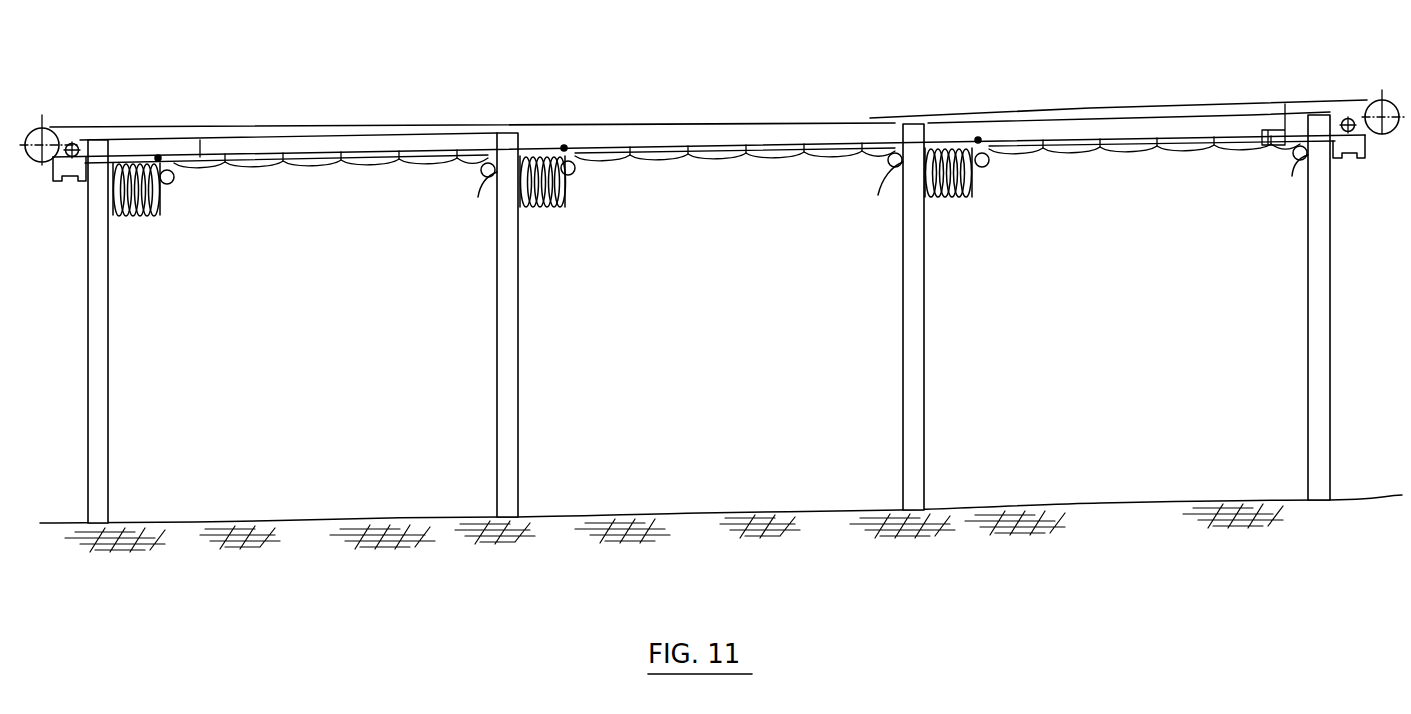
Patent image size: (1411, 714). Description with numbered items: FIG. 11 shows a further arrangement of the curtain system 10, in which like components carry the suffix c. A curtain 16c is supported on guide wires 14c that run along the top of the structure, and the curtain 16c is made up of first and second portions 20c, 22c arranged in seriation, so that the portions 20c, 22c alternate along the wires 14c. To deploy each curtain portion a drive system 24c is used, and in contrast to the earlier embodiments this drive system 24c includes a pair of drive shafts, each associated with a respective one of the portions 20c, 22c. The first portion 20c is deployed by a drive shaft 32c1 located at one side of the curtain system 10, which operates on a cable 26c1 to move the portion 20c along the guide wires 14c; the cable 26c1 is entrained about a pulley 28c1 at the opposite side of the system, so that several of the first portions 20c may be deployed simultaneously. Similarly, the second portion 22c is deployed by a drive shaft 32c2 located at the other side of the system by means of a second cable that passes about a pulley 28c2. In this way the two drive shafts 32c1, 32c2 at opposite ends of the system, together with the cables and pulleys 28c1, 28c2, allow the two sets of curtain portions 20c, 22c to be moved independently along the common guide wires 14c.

The curtain system 10 is at (440, 434).
The guide wires 14c is at (375, 167).
The curtain 16c is at (220, 200).
The first curtain portion 20c is at (308, 170).
The second curtain portion 22c is at (157, 218).
The drive system 24c is at (55, 122).
The cable 26c1 is at (207, 152).
The pulley 28c1 is at (77, 146).
The pulley 28c2 is at (1336, 108).
The drive shaft 32c1 is at (1389, 133).
The drive shaft 32c2 is at (35, 157).